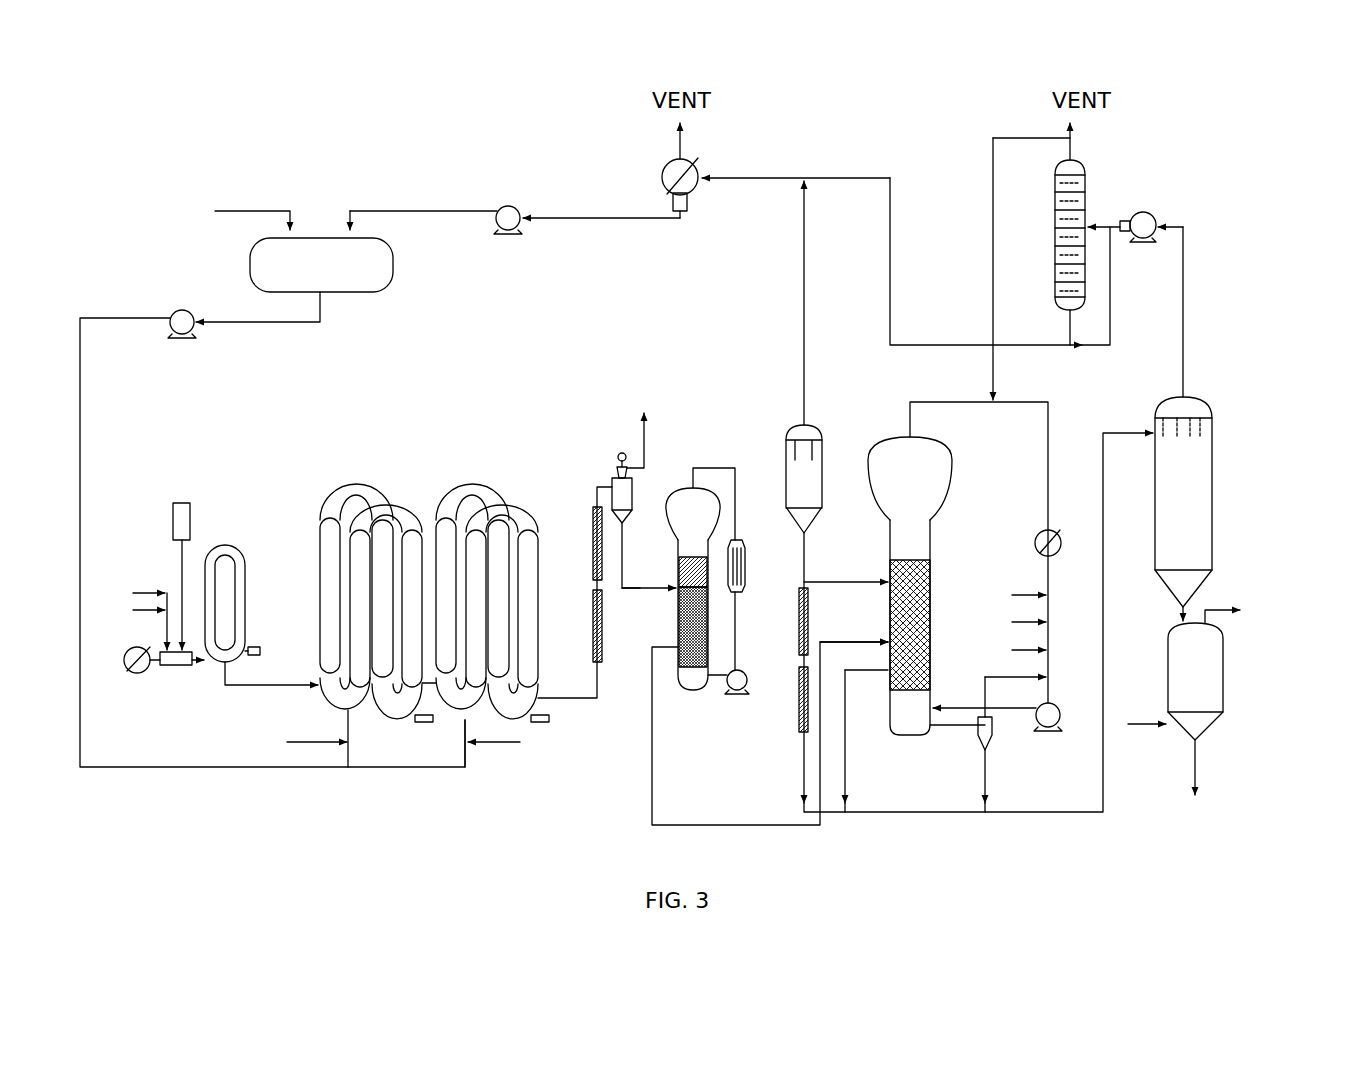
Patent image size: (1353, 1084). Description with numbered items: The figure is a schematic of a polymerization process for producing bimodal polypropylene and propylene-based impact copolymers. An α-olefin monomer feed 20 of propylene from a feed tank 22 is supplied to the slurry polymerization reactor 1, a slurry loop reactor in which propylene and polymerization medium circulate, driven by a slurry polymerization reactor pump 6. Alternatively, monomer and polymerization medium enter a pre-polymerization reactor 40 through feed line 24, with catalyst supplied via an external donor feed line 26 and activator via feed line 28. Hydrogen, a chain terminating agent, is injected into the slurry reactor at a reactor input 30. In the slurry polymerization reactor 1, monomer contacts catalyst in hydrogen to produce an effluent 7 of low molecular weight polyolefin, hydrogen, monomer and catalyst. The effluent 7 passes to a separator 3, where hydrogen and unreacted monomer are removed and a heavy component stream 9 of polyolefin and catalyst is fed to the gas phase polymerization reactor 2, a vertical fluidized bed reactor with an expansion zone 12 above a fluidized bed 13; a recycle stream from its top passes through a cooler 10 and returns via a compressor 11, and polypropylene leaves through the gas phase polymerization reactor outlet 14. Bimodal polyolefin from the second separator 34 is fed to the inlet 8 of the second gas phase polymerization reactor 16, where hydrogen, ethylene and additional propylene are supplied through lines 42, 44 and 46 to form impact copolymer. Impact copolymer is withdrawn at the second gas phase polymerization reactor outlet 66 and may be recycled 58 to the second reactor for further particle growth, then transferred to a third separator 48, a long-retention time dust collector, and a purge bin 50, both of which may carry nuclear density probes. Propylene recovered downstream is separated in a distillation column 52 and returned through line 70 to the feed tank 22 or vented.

The slurry polymerization reactor 1 is at (405, 462).
The gas phase polymerization reactor 2 is at (704, 378).
The separator 3 is at (610, 440).
The slurry polymerization reactor pump 6 is at (430, 722).
The effluent 7 is at (570, 700).
The inlet of second gas phase polymerization reactor 8 is at (880, 635).
The heavy component stream 9 is at (632, 521).
The cooler 10 is at (745, 545).
The compressor 11 is at (748, 680).
The expansion zone 12 is at (677, 488).
The fluidized bed 13 is at (677, 640).
The gas phase polymerization reactor outlet 14 is at (652, 688).
The second gas phase polymerization reactor 16 is at (952, 470).
The α-olefin monomer feed 20 is at (215, 211).
The feed tank 22 is at (248, 265).
The feed line 24 is at (182, 503).
The external donor feed line 26 is at (133, 593).
The feed line 28 is at (133, 612).
The reactor input 30 is at (287, 742).
The second separator 34 is at (815, 425).
The pre-polymerization reactor 40 is at (230, 545).
The line 42 is at (1014, 595).
The line 44 is at (1014, 622).
The line 46 is at (1014, 650).
The third separator 48 is at (1215, 452).
The purge bin 50 is at (1227, 685).
The distillation column 52 is at (1085, 165).
The recycle 58 is at (1065, 410).
The second gas phase polymerization reactor outlet 66 is at (886, 672).
The transfer line 70 is at (1187, 298).